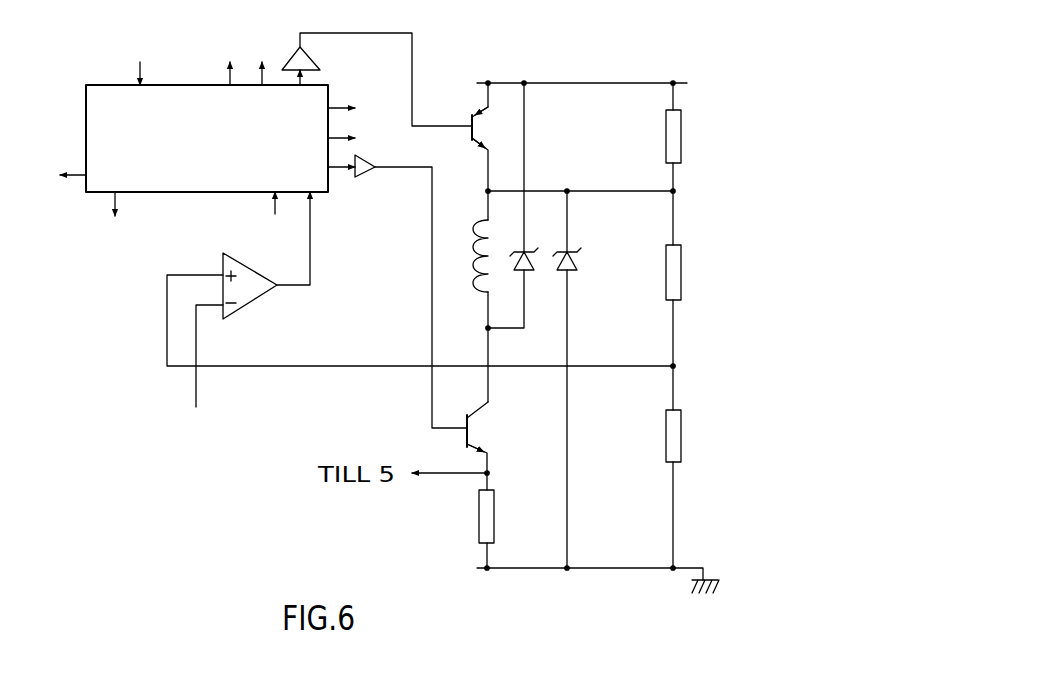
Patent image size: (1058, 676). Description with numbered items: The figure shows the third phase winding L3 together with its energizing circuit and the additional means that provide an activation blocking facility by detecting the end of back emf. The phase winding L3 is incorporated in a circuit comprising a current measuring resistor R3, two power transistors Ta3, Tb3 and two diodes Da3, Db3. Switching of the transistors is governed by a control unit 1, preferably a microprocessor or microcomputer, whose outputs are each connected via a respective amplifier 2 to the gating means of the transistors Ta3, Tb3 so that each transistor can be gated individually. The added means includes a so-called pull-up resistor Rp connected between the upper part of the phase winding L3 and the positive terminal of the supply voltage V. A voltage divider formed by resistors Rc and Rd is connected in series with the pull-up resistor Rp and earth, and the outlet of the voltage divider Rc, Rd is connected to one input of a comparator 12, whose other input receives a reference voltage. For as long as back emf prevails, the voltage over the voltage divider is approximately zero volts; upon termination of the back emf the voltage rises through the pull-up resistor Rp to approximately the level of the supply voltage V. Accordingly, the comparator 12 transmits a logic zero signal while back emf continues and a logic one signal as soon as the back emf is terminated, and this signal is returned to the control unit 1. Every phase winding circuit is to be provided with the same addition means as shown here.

The control unit 1 is at (104, 87).
The amplifier 2 is at (311, 60).
The comparator 12 is at (254, 301).
The power transistor Tb3 is at (468, 114).
The power transistor Ta3 is at (478, 417).
The phase winding L3 is at (476, 239).
The diode Db3 is at (528, 250).
The diode Da3 is at (578, 254).
The pull-up resistor Rp is at (692, 137).
The voltage divider resistor Rc is at (691, 278).
The voltage divider resistor Rd is at (692, 467).
The current measuring resistor R3 is at (465, 520).
The supply voltage V is at (658, 82).